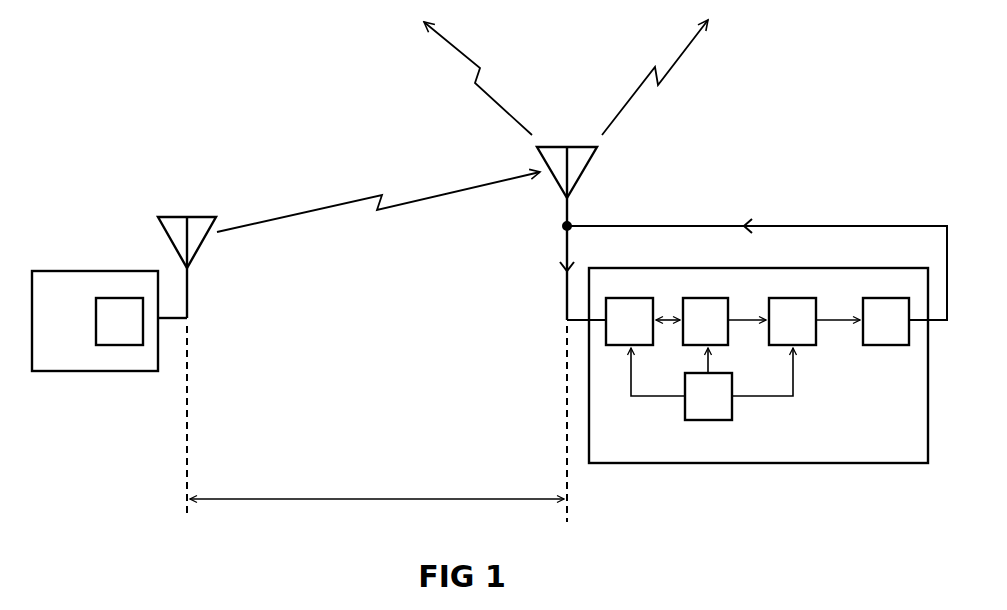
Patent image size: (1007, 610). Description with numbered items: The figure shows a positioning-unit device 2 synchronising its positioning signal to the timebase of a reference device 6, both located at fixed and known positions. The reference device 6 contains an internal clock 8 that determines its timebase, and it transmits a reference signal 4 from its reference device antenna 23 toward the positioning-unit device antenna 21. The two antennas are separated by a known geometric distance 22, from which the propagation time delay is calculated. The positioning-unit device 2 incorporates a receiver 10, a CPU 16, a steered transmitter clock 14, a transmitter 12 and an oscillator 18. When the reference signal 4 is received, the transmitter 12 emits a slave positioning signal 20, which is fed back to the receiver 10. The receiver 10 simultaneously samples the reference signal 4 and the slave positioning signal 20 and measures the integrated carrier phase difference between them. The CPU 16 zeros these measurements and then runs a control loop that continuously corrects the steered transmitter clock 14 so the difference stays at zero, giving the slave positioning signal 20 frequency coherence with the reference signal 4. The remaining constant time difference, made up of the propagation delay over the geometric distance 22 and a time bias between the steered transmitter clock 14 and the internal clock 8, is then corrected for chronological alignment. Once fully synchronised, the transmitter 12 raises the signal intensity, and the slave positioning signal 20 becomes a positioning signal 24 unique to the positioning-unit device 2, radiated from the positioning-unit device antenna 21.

The positioning-unit device 2 is at (866, 464).
The reference signal 4 is at (405, 203).
The reference device 6 is at (95, 372).
The internal clock 8 is at (110, 334).
The receiver 10 is at (616, 334).
The transmitter 12 is at (872, 334).
The steered transmitter clock 14 is at (779, 334).
The CPU 16 is at (692, 334).
The oscillator 18 is at (695, 409).
The slave positioning signal 20 is at (838, 226).
The positioning-unit device antenna 21 is at (580, 147).
The geometric distance 22 is at (363, 499).
The reference device antenna 23 is at (167, 216).
The positioning signal 24 is at (442, 50).